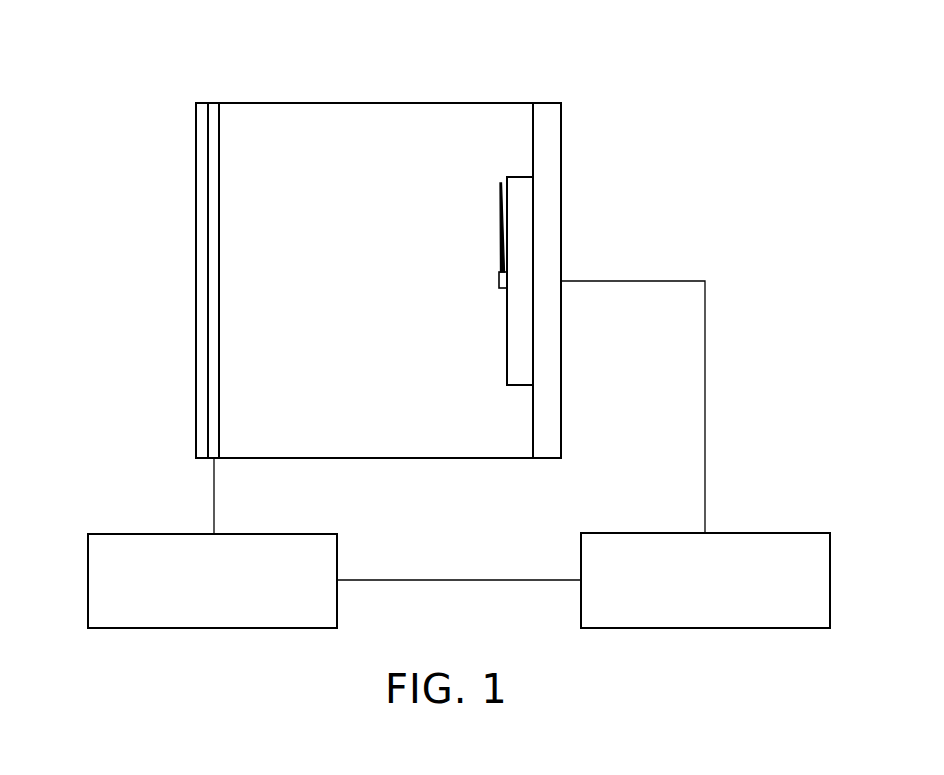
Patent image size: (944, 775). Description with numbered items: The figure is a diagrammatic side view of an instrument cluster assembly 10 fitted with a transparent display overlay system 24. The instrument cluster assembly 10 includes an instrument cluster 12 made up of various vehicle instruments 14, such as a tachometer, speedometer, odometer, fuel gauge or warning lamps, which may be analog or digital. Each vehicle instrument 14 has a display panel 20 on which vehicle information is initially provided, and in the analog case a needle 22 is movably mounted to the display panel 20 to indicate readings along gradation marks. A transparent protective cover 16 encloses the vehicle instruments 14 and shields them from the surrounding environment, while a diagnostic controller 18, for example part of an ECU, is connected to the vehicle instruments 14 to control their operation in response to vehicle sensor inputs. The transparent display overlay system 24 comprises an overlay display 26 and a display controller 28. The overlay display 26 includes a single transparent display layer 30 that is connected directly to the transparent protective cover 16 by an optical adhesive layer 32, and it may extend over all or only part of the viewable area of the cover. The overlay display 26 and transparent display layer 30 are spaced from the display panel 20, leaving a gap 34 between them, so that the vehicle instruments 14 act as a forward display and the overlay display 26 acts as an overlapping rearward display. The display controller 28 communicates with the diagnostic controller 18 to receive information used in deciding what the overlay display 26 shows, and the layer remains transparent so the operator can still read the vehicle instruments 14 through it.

The instrument cluster assembly 10 is at (760, 82).
The instrument cluster 12 is at (583, 231).
The vehicle instrument 14 is at (507, 316).
The transparent protective cover 16 is at (200, 207).
The diagnostic controller 18 is at (722, 594).
The display panel 20 is at (507, 368).
The needle 22 is at (501, 223).
The transparent display overlay system 24 is at (152, 63).
The overlay display 26 is at (233, 150).
The display controller 28 is at (229, 594).
The transparent display layer 30 is at (215, 272).
The optical adhesive layer 32 is at (207, 350).
The gap 34 is at (332, 150).